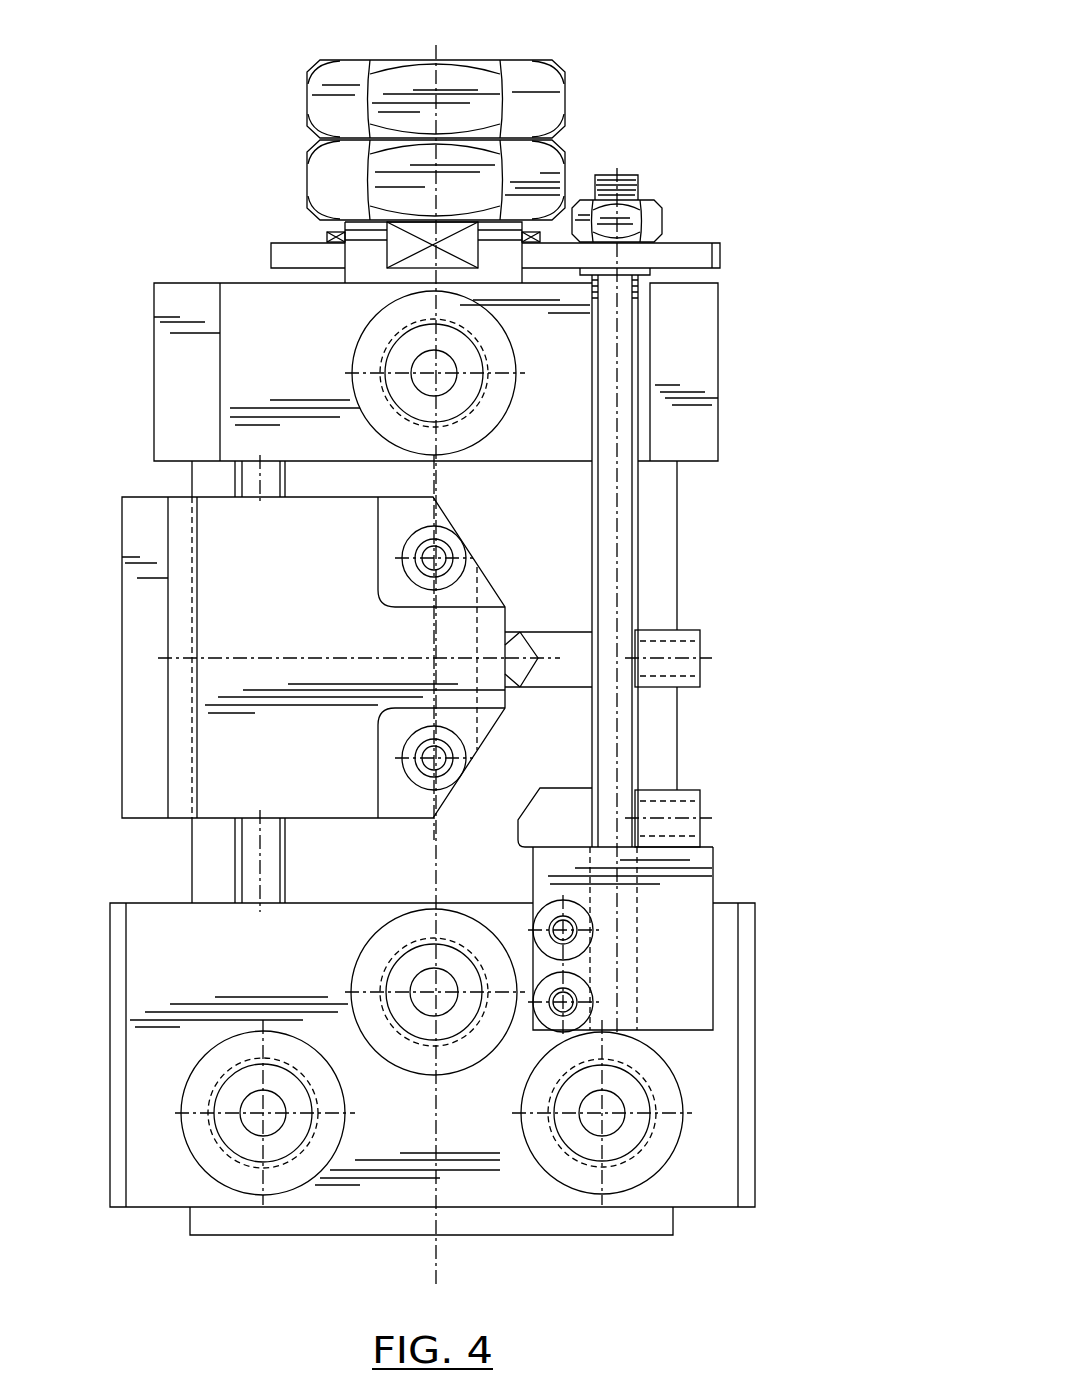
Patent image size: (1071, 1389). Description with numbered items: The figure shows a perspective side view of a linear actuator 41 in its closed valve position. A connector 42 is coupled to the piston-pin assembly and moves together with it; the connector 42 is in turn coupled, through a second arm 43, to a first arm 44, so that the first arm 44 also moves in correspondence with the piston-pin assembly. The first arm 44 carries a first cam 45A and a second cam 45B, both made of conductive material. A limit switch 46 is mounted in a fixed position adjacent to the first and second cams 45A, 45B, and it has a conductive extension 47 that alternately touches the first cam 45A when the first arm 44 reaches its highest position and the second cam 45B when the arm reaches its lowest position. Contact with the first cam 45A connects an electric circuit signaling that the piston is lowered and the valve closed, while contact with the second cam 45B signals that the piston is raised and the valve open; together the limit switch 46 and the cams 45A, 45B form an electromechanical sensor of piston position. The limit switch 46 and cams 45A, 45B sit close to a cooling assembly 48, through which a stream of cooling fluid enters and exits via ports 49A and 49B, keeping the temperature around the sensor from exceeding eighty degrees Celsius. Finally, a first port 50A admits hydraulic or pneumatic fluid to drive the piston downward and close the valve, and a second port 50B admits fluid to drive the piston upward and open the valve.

The linear actuator 41 is at (739, 99).
The connector 42 is at (542, 100).
The second arm 43 is at (705, 255).
The first arm 44 is at (630, 493).
The first cam 45A is at (570, 650).
The second cam 45B is at (567, 815).
The limit switch 46 is at (243, 622).
The conductive extension 47 is at (538, 645).
The cooling assembly 48 is at (145, 1062).
The port 49A is at (213, 1155).
The port 49B is at (662, 1142).
The first port 50A is at (370, 345).
The second port 50B is at (378, 955).